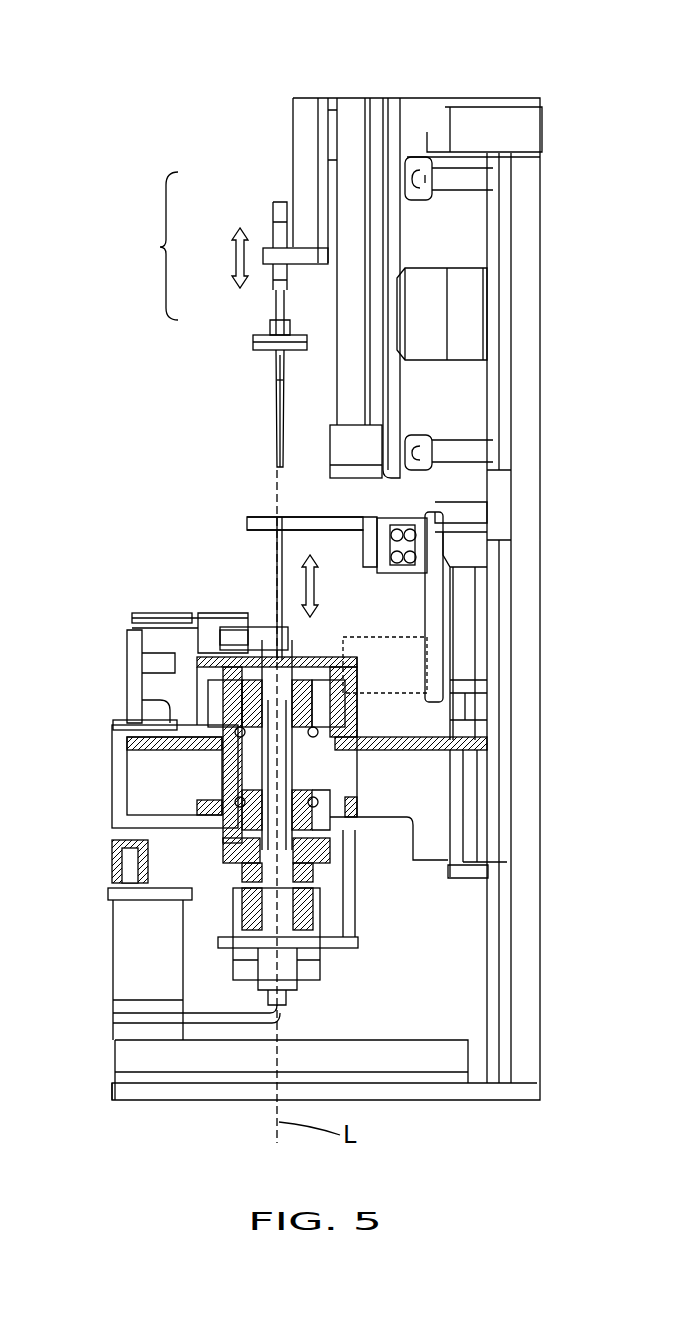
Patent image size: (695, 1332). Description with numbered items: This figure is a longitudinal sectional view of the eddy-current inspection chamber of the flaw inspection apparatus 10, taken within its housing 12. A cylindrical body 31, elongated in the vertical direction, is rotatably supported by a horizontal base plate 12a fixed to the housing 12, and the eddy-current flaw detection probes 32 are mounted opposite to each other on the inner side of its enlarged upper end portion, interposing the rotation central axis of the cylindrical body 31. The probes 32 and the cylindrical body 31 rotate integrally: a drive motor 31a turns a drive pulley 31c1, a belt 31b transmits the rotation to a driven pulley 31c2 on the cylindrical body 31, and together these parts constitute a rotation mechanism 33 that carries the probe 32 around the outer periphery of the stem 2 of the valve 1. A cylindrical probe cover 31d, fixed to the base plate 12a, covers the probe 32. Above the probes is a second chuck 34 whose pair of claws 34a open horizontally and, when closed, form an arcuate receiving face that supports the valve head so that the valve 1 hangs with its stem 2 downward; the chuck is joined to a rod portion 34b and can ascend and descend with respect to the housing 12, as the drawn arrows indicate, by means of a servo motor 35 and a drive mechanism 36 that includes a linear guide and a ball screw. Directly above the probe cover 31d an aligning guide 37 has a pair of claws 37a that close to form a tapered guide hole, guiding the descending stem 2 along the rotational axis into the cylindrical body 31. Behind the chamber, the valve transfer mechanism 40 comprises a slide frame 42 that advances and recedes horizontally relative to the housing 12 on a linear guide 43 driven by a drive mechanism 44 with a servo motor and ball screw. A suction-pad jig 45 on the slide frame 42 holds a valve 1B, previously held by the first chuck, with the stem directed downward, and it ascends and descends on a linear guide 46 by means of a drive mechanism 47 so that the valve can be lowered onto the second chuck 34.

The flaw inspection apparatus 10 is at (147, 44).
The housing 12 is at (540, 805).
The horizontal base plate 12a is at (115, 758).
The valve 1 is at (206, 395).
The valve 1B is at (263, 396).
The stem 2 is at (278, 447).
The cylindrical body 31 is at (335, 775).
The drive motor 31a is at (137, 955).
The belt 31b is at (166, 795).
The drive pulley 31c1 is at (115, 860).
The driven pulley 31c2 is at (335, 855).
The cylindrical probe cover 31d is at (345, 660).
The eddy-current flaw detection probe 32 is at (240, 690).
The rotation mechanism 33 is at (330, 826).
The second chuck 34 is at (258, 556).
The claws 34a is at (248, 522).
The rod portion 34b is at (186, 556).
The servo motor 35 is at (527, 621).
The drive mechanism 36 is at (470, 552).
The aligning guide 37 is at (175, 612).
The claws 37a is at (275, 635).
The valve transfer mechanism 40 is at (183, 246).
The slide frame 42 is at (329, 273).
The linear guide 43 is at (435, 180).
The drive mechanism 44 is at (462, 313).
The suction-pad jig 45 is at (273, 307).
The linear guide 46 is at (401, 114).
The drive mechanism 47 is at (340, 122).